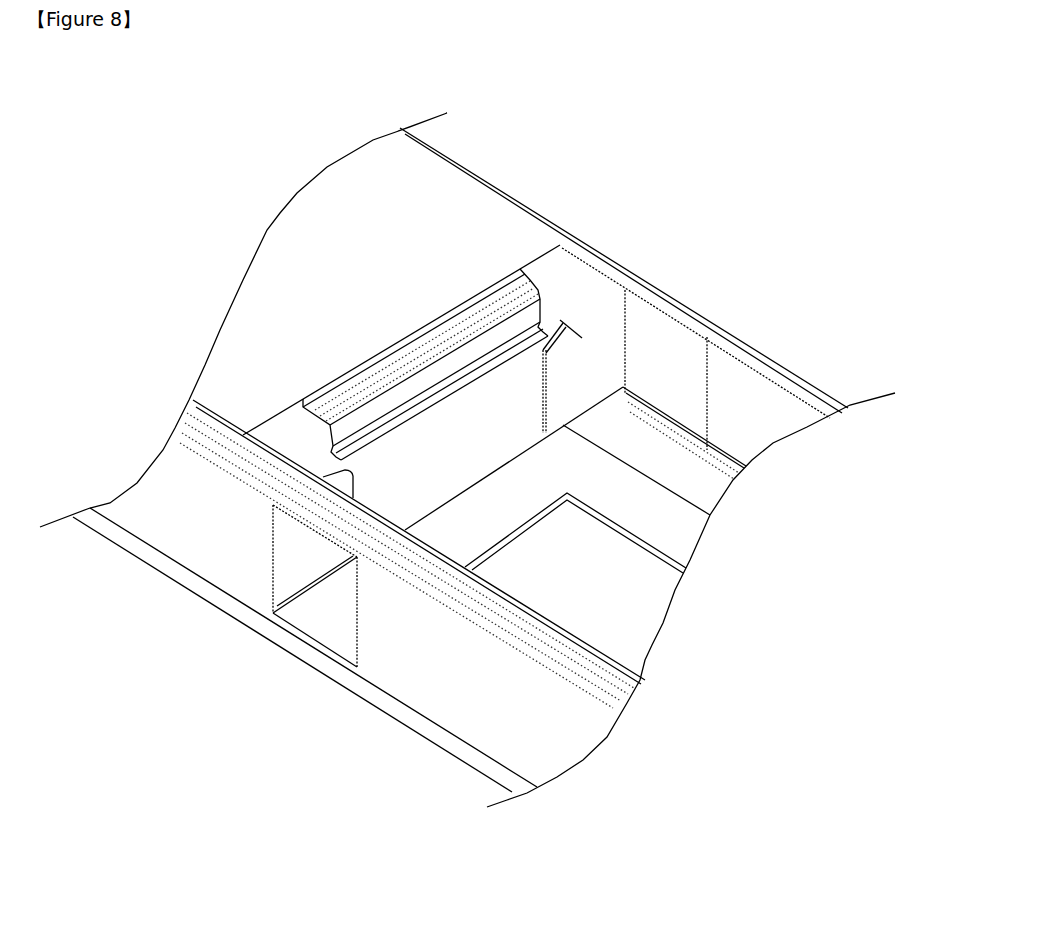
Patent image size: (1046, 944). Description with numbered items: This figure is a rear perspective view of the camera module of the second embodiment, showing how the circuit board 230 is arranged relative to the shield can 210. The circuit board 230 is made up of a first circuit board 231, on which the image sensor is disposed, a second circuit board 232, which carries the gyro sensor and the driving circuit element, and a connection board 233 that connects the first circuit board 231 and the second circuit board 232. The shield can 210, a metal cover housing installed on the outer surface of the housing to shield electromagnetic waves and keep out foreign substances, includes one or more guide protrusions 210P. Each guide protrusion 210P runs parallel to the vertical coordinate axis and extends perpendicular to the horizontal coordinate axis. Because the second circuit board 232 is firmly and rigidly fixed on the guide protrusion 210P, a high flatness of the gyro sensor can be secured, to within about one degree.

The shield can 210 is at (625, 288).
The guide protrusion 210P is at (317, 547).
The circuit board 230 is at (361, 284).
The first circuit board 231 is at (257, 308).
The second circuit board 232 is at (457, 430).
The connection board 233 is at (383, 395).